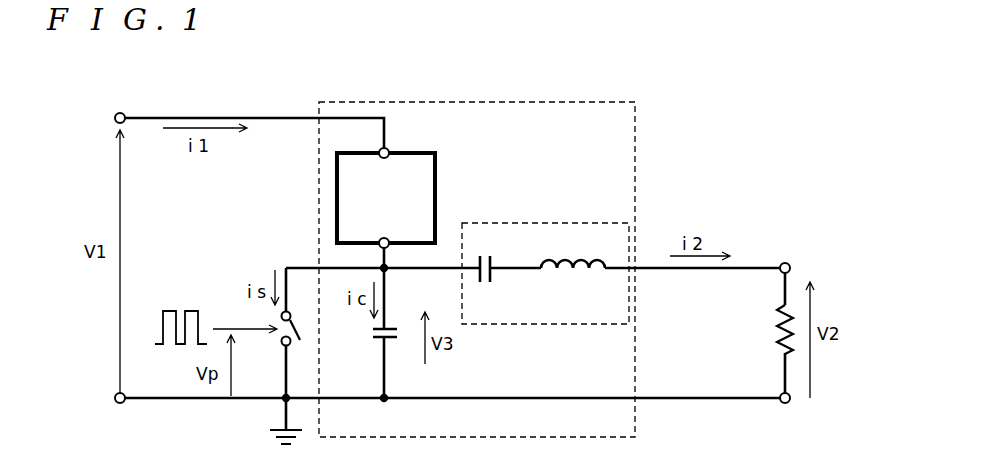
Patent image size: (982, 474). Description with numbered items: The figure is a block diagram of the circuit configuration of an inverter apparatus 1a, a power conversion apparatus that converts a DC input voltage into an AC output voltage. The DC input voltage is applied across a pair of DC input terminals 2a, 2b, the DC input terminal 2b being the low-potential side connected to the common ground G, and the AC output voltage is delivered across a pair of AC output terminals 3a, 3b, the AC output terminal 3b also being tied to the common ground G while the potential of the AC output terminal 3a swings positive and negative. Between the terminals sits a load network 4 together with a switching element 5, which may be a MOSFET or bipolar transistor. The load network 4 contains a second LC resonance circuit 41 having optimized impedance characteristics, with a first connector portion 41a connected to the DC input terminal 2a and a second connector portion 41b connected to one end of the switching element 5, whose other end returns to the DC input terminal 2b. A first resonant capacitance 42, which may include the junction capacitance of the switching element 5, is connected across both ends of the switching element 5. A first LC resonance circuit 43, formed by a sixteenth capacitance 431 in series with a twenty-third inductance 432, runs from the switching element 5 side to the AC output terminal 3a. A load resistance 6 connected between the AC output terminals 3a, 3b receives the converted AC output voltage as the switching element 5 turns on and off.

The inverter apparatus 1a is at (390, 73).
The DC input terminal 2a is at (122, 112).
The DC input terminal 2b is at (122, 404).
The AC output terminal 3a is at (788, 262).
The AC output terminal 3b is at (787, 404).
The load network 4 is at (590, 102).
The second LC resonance circuit 41 is at (437, 183).
The first connector portion 41a is at (391, 150).
The second connector portion 41b is at (378, 245).
The first resonant capacitance 42 is at (392, 322).
The first LC resonance circuit 43 is at (560, 223).
The sixteenth capacitance 431 is at (492, 254).
The twenty-third inductance 432 is at (567, 254).
The switching element 5 is at (292, 318).
The load resistance 6 is at (777, 335).
The common ground G is at (290, 428).